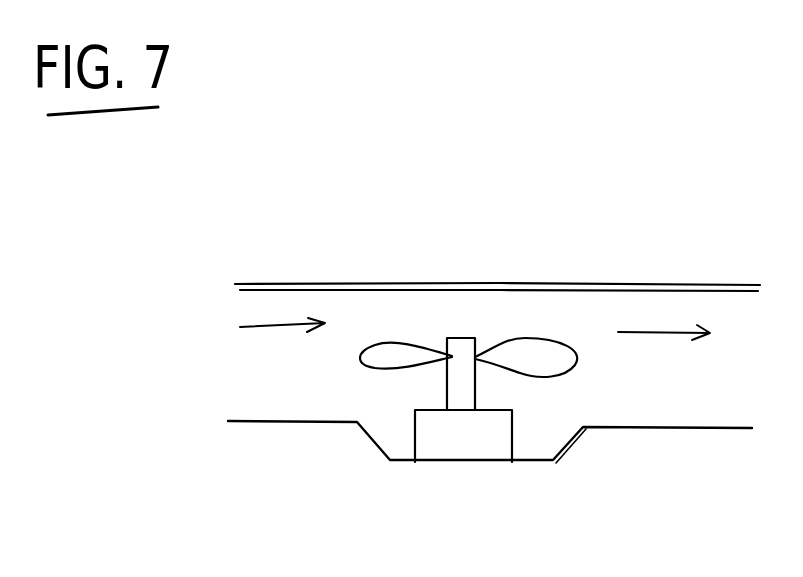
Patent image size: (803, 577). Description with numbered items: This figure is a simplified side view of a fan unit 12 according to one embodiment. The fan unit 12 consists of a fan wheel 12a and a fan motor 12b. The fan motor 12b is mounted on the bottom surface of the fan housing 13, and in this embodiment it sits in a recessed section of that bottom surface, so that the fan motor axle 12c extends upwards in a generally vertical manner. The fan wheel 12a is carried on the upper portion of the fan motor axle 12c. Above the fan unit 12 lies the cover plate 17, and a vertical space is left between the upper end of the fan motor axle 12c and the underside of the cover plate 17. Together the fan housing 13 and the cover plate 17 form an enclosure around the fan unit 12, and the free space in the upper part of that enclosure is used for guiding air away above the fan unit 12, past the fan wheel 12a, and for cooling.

The fan unit 12 is at (575, 248).
The fan wheel 12a is at (390, 355).
The fan motor 12b is at (437, 452).
The fan motor axle 12c is at (458, 340).
The fan housing 13 is at (292, 418).
The cover plate 17 is at (277, 283).